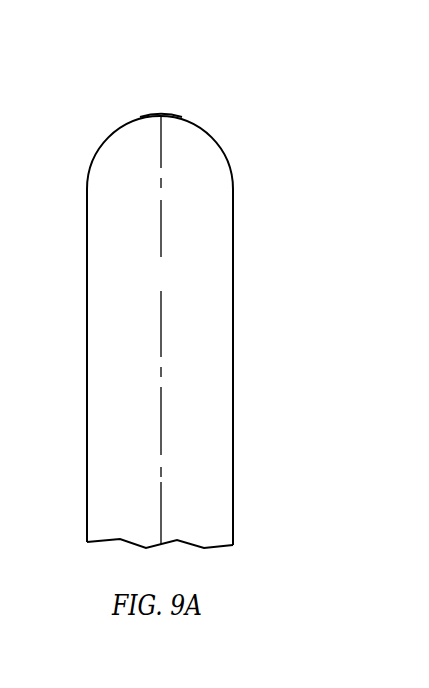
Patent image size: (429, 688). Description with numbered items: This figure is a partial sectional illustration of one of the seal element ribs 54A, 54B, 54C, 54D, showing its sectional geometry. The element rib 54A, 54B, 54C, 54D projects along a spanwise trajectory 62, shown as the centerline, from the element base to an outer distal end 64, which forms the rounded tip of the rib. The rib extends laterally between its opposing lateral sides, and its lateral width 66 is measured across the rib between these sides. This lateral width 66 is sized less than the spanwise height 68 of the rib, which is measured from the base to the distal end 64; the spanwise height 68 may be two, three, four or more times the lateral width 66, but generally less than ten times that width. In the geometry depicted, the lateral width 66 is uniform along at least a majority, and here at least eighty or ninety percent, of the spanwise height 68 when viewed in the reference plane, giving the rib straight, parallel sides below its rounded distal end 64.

The element rib 54A is at (241, 295).
The element rib 54B is at (241, 295).
The element rib 54C is at (241, 295).
The element rib 54D is at (305, 73).
The spanwise trajectory 62 is at (161, 398).
The outer distal end 64 is at (161, 117).
The lateral width 66 is at (232, 272).
The spanwise height 68 is at (45, 116).